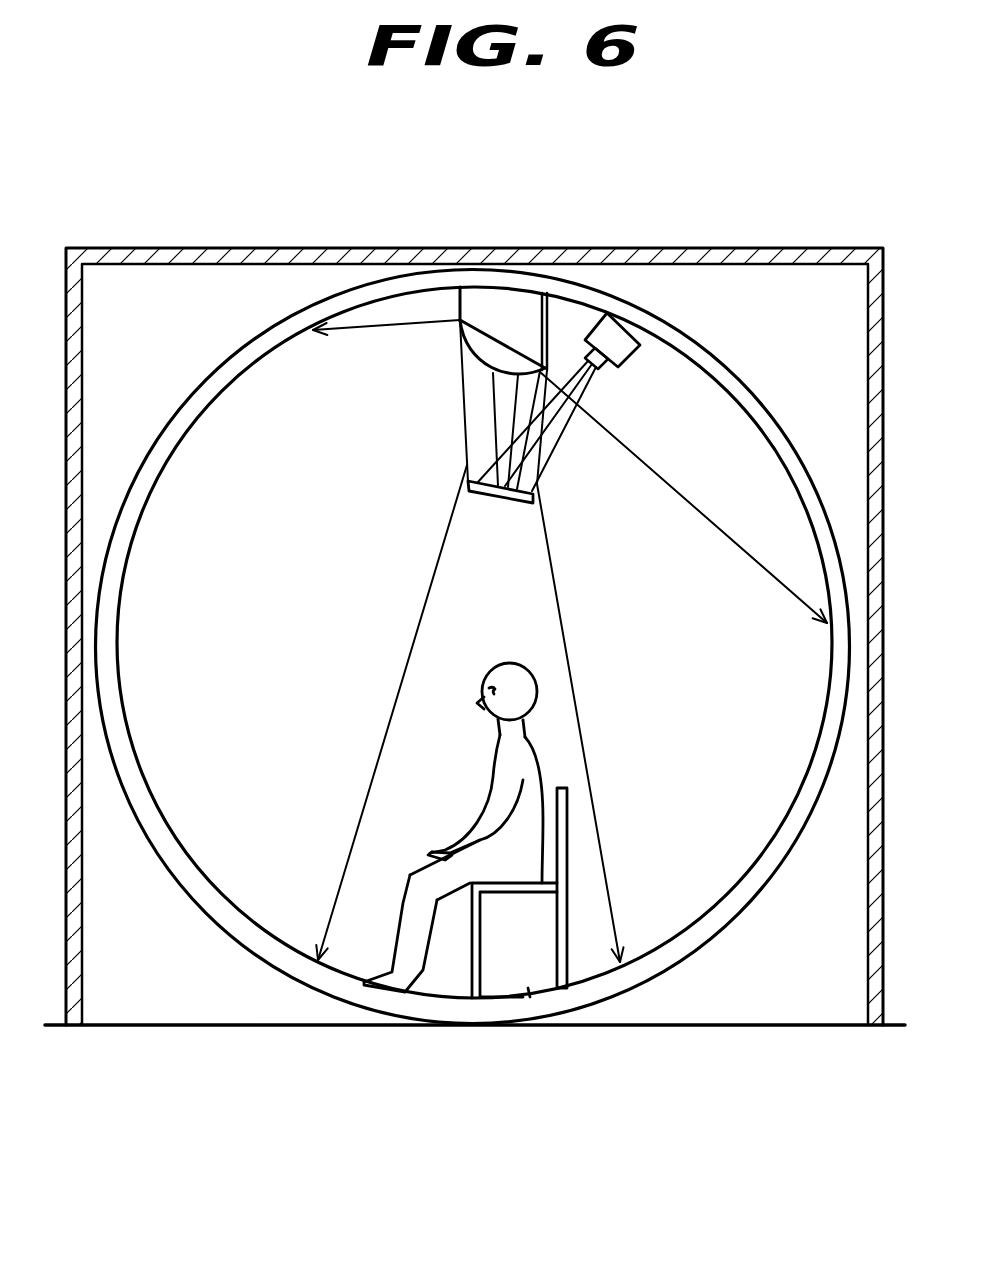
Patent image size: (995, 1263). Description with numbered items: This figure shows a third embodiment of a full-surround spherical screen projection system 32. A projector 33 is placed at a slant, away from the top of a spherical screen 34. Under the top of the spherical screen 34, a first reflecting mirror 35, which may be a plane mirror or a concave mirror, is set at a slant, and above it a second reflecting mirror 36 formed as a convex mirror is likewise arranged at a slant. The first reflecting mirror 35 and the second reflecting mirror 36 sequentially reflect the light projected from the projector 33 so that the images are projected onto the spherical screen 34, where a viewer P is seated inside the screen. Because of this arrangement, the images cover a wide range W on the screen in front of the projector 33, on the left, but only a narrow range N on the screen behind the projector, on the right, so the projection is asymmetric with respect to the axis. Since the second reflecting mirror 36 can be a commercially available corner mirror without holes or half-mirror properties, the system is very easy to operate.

The full-surround spherical screen projection system 32 is at (523, 177).
The projector 33 is at (619, 328).
The spherical screen 34 is at (258, 931).
The first reflecting mirror 35 is at (503, 503).
The second reflecting mirror 36 is at (481, 344).
The viewer (person) P is at (515, 672).
The wide range W is at (159, 808).
The narrow range N is at (795, 798).